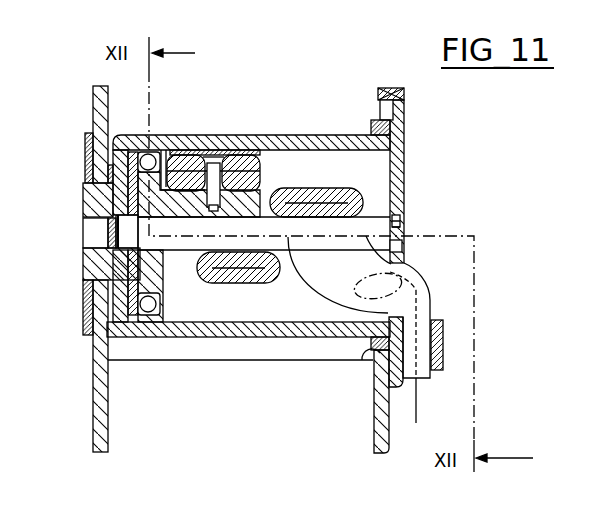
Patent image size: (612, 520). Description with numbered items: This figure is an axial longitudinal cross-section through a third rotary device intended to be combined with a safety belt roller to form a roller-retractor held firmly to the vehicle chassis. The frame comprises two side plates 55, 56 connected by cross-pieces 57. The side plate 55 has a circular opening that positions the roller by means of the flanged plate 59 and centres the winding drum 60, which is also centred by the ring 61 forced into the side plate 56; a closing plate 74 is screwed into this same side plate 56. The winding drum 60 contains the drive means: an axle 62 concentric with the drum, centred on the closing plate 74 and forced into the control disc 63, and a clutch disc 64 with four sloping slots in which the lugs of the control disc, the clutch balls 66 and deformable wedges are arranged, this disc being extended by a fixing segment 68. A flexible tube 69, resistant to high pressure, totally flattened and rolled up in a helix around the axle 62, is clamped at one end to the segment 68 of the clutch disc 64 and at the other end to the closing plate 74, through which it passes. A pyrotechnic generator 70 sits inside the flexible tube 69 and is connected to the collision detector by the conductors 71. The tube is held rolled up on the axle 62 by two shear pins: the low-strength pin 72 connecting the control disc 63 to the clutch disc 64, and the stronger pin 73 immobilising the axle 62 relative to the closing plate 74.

The side plate 55 is at (92, 432).
The side plate 56 is at (386, 448).
The cross-piece 57 is at (294, 360).
The flanged plate 59 is at (87, 145).
The winding drum 60 is at (346, 143).
The ring 61 is at (373, 343).
The axle 62 is at (130, 240).
The control disc 63 is at (148, 202).
The clutch disc 64 is at (153, 200).
The clutch ball 66 is at (130, 325).
The fixing segment 68 is at (192, 200).
The flexible tube 69 is at (245, 262).
The pyrotechnic generator 70 is at (400, 279).
The conductor 71 is at (414, 403).
The shear pin of low strength 72 is at (122, 255).
The shear pin of greater strength 73 is at (404, 217).
The closing plate 74 is at (406, 182).